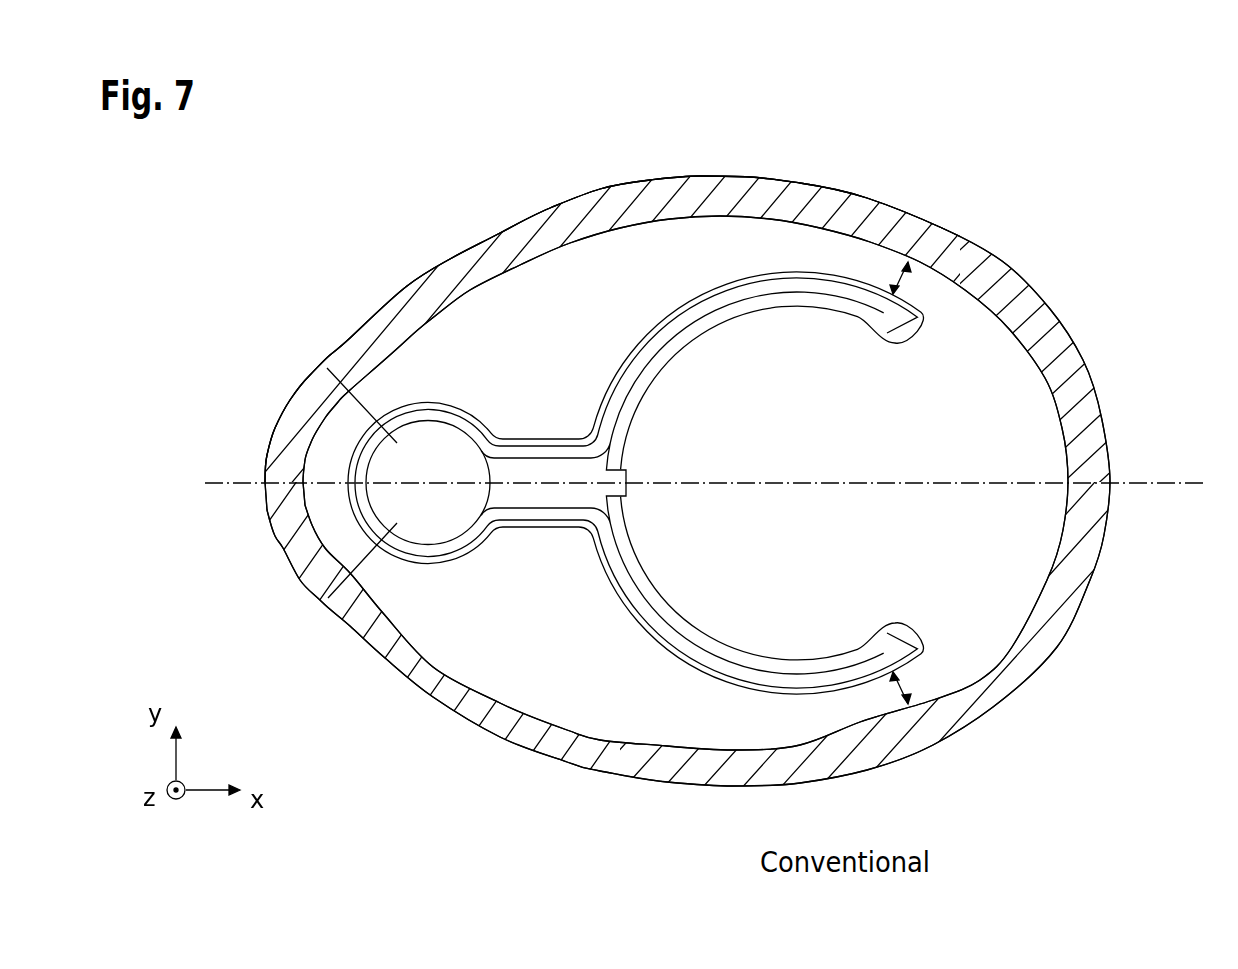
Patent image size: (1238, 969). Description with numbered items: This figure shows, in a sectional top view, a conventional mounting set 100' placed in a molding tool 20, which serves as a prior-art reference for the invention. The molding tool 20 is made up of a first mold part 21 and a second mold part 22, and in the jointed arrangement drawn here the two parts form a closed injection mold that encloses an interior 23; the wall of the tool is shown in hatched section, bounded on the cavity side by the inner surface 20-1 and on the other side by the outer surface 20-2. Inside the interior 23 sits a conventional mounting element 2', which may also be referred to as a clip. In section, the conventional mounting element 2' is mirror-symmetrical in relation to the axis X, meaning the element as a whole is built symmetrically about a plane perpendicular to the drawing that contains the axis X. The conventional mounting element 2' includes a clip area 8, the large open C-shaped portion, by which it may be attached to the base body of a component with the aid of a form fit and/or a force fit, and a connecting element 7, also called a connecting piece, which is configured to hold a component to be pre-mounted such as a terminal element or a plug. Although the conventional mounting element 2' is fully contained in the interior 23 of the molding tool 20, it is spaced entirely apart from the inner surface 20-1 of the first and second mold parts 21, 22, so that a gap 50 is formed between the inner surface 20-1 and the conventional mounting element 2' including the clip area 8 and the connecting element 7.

The conventional mounting set 100' is at (657, 461).
The molding tool 20 is at (619, 484).
The inner surface 20-1 is at (712, 224).
The outer housing layer 20-2 is at (652, 180).
The first mold part 21 is at (1097, 372).
The second mold part 22 is at (1097, 596).
The interior 23 is at (503, 322).
The clip area 8 is at (639, 361).
The connecting element 7 is at (460, 442).
The conventional mounting element 2' is at (714, 417).
The gap 50 is at (368, 408).
The axis X is at (1150, 479).